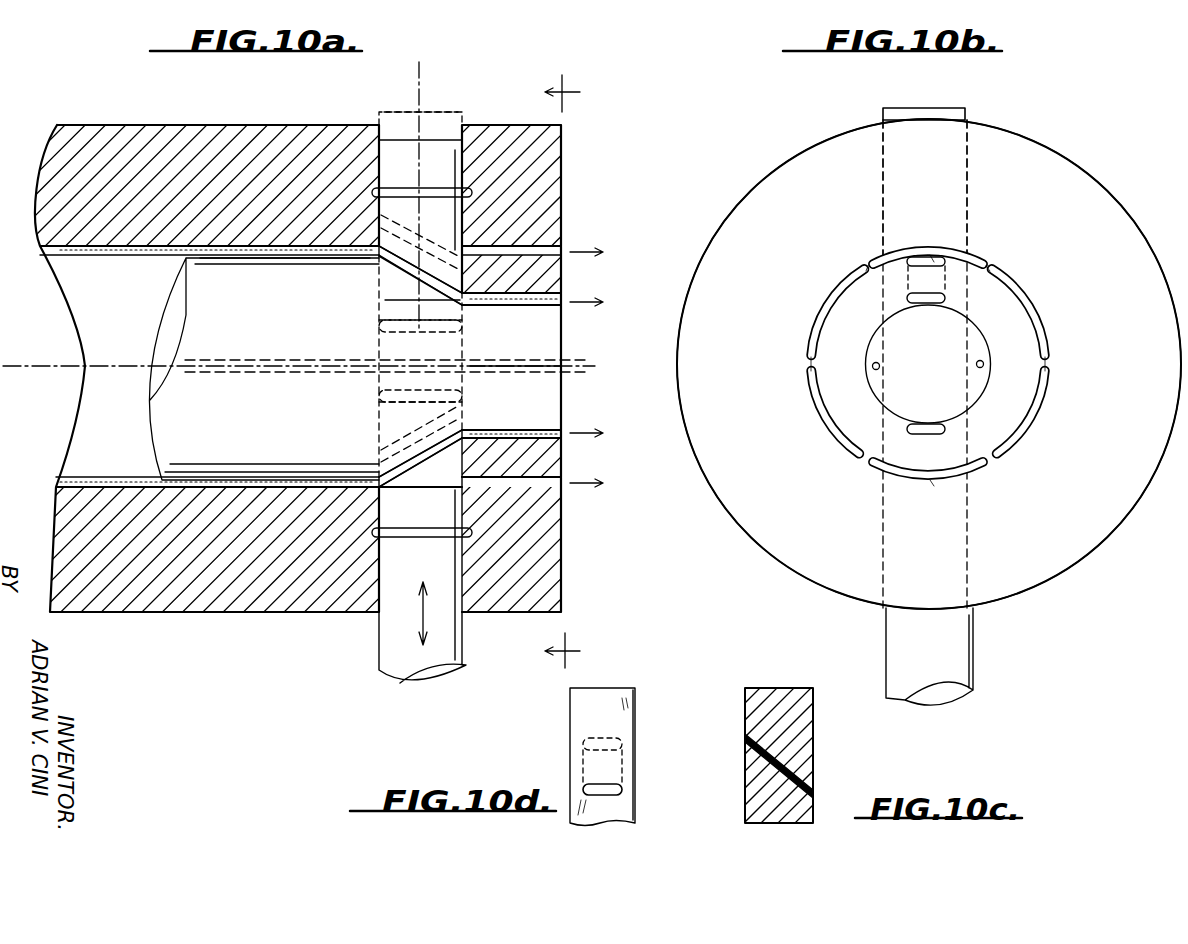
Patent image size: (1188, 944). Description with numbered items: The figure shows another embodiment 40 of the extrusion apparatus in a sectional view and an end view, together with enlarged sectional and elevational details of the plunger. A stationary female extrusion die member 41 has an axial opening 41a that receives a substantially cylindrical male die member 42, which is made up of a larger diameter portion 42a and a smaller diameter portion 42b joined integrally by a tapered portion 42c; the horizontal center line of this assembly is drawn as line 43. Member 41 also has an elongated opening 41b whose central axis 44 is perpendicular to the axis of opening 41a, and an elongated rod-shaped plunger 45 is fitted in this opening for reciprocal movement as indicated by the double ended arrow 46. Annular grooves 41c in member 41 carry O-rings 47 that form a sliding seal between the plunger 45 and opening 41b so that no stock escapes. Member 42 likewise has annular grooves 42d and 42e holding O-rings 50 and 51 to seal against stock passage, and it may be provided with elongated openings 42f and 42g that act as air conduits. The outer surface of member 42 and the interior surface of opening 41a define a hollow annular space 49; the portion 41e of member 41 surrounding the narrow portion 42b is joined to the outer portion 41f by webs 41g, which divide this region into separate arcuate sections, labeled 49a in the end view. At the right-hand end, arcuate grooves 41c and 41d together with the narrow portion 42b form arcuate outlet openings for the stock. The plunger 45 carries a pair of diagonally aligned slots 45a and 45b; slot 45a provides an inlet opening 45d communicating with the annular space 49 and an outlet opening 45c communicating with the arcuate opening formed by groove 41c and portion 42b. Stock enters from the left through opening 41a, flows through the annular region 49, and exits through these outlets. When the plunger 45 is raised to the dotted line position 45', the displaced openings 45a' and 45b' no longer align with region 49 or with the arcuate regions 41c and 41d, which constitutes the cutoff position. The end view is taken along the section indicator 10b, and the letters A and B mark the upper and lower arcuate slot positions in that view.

In FIG. 10A, the embodiment 40 is at (255, 100).
In FIG. 10A, the stationary female extrusion die member 41 is at (122, 140).
In FIG. 10B, the stationary female extrusion die member 41 is at (852, 375).
In FIG. 10A, the axial opening 41a is at (65, 248).
In FIG. 10A, the elongated opening 41b is at (380, 155).
In FIG. 10B, the elongated opening 41b is at (945, 352).
In FIG. 10A, the annular shaped groove 41c is at (372, 190).
In FIG. 10B, the annular shaped groove 41c is at (945, 298).
In FIG. 10B, the arcuate shaped groove 41d is at (926, 435).
In FIG. 10A, the portion surrounding narrow diameter portion 41e is at (563, 462).
In FIG. 10A, the outer portion 41f is at (561, 178).
In FIG. 10B, the outer portion 41f is at (770, 290).
In FIG. 10B, the webs 41g is at (868, 265).
In FIG. 10A, the male die member 42 is at (160, 312).
In FIG. 10A, the larger diameter portion 42a is at (275, 302).
In FIG. 10A, the smaller diameter portion 42b is at (515, 349).
In FIG. 10A, the tapered portion 42c is at (440, 302).
In FIG. 10A, the annular shaped groove 42d is at (368, 320).
In FIG. 10A, the annular shaped groove 42e is at (378, 396).
In FIG. 10A, the elongated opening 42f is at (387, 344).
In FIG. 10B, the elongated opening 42f is at (880, 367).
In FIG. 10A, the elongated opening 42g is at (298, 358).
In FIG. 10B, the elongated opening 42g is at (977, 368).
In FIG. 10A, the longitudinal axis 43 is at (34, 368).
In FIG. 10A, the central axis 44 is at (416, 95).
In FIG. 10B, the central axis 44 is at (885, 195).
In FIG. 10A, the plunger 45 is at (394, 411).
In FIG. 10B, the plunger 45 is at (949, 412).
In FIG. 10D, the plunger 45 is at (572, 757).
In FIG. 10C, the plunger 45 is at (778, 741).
In FIG. 10A, the dotted line position 45' is at (433, 86).
In FIG. 10B, the dotted line position 45' is at (949, 103).
In FIG. 10A, the diagonally aligned slot 45a is at (387, 275).
In FIG. 10C, the diagonally aligned slot 45a is at (812, 764).
In FIG. 10A, the displaced slot opening 45a' is at (459, 242).
In FIG. 10A, the diagonally aligned slot 45b is at (387, 458).
In FIG. 10A, the displaced slot opening 45b' is at (420, 433).
In FIG. 10D, the outlet opening 45c is at (622, 790).
In FIG. 10C, the outlet opening 45c is at (813, 796).
In FIG. 10D, the inlet opening 45d is at (582, 744).
In FIG. 10C, the inlet opening 45d is at (748, 740).
In FIG. 10A, the double ended arrow 46 is at (439, 613).
In FIG. 10A, the O-rings 47 is at (472, 192).
In FIG. 10A, the hollow annular space 49 is at (242, 244).
In FIG. 10B, the arcuate slot 49a is at (978, 261).
In FIG. 10A, the O-ring 50 is at (462, 326).
In FIG. 10A, the O-ring 51 is at (462, 396).
In FIG. 10A, the section line 10b is at (537, 371).
In FIG. 10B, the position A is at (935, 261).
In FIG. 10B, the position B is at (932, 485).